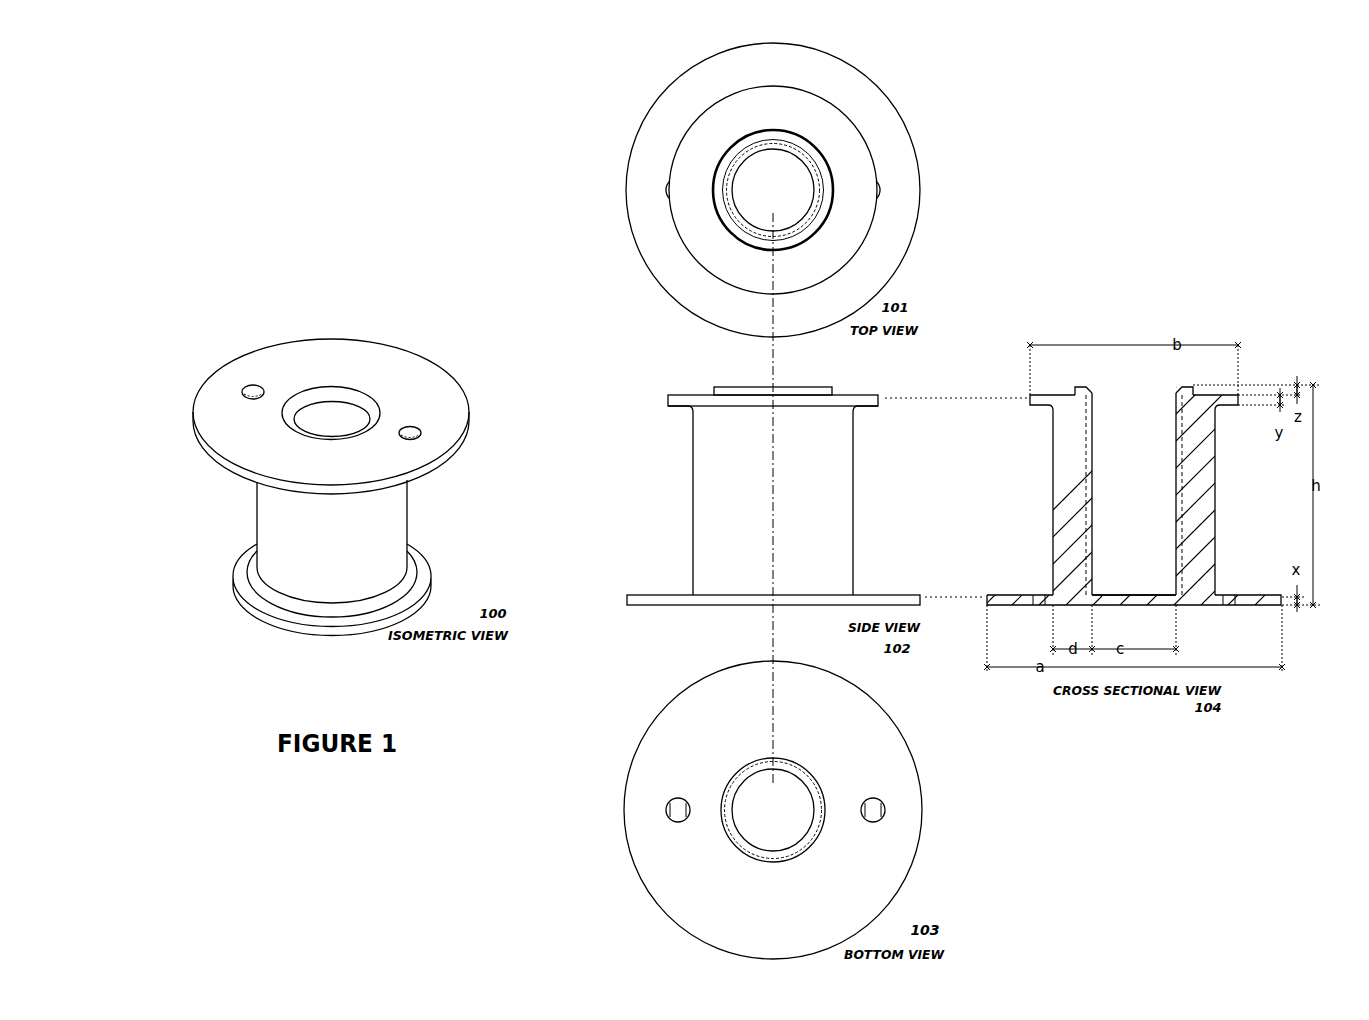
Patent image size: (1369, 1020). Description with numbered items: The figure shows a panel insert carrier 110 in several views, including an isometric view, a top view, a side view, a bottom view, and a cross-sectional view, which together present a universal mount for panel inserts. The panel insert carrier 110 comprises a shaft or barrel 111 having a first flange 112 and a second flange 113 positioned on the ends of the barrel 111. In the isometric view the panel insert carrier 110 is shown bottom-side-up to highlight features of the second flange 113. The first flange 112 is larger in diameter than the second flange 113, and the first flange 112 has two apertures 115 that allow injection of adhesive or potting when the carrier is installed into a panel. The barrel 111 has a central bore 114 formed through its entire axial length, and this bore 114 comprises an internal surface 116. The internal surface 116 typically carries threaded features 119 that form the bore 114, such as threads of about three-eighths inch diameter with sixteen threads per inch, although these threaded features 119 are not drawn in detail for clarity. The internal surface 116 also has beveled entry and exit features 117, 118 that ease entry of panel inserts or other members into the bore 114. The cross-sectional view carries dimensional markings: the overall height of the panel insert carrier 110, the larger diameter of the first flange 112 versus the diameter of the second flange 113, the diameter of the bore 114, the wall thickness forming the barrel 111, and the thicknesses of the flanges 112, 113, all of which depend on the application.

The panel insert carrier 110 is at (622, 279).
The barrel 111 is at (859, 503).
The first flange 112 is at (630, 231).
The second flange 113 is at (870, 237).
The central bore 114 is at (795, 203).
The apertures 115 is at (668, 189).
The internal surface 116 is at (809, 176).
The beveled exit feature 117 is at (1095, 599).
The beveled entry feature 118 is at (1096, 391).
The threaded features 119 is at (1179, 524).